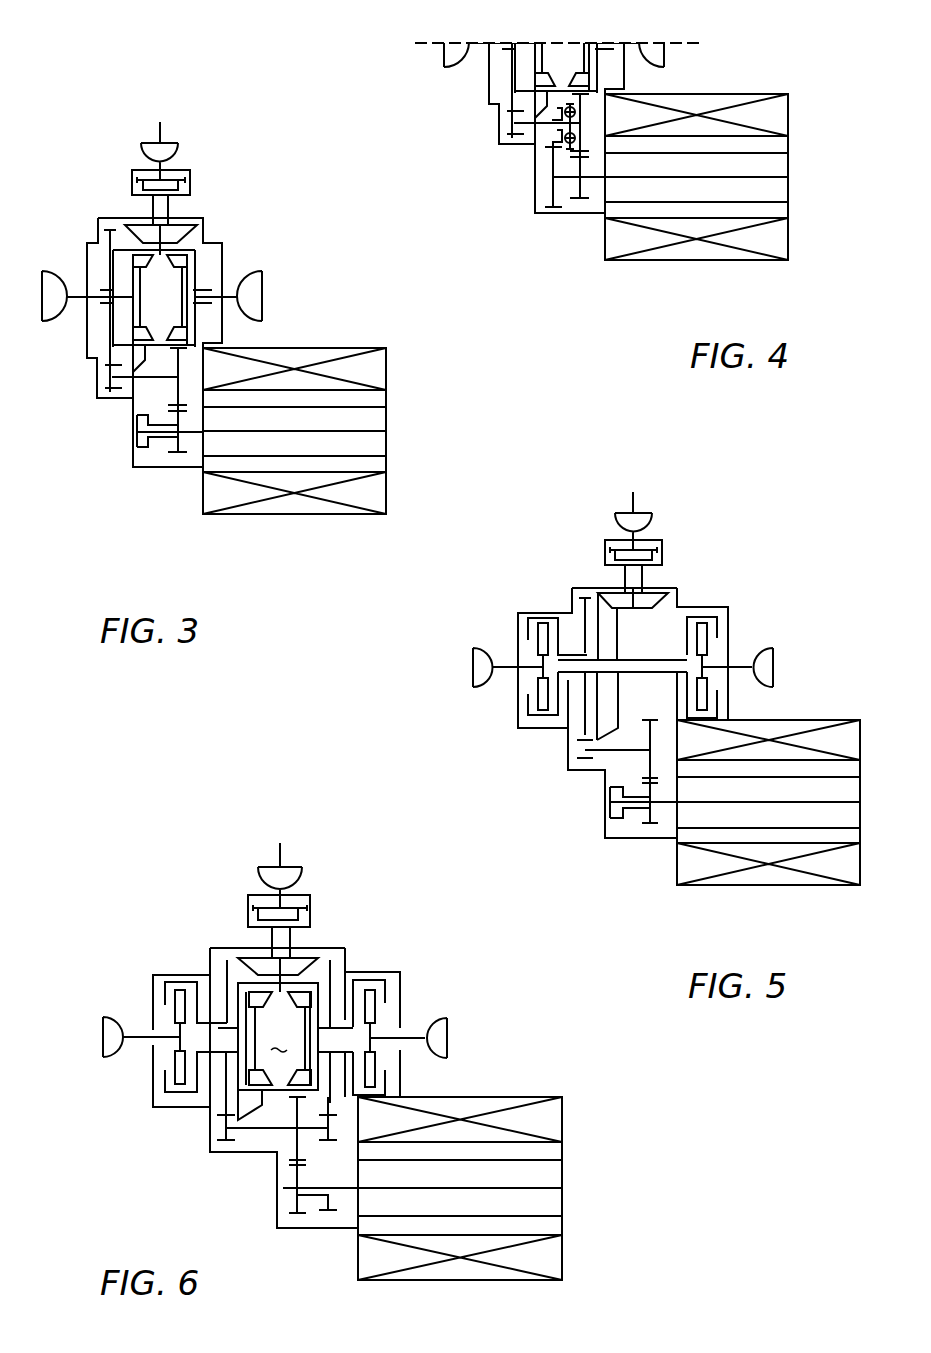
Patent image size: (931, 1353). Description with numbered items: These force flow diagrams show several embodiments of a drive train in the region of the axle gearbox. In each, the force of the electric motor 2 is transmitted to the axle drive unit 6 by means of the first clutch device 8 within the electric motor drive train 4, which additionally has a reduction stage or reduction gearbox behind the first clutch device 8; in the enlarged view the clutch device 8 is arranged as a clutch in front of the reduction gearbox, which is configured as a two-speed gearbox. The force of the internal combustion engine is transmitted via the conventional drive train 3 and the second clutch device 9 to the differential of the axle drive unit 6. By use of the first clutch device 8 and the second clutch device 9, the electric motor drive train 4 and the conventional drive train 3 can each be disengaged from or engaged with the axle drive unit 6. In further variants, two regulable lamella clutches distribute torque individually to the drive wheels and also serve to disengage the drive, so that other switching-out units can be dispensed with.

In FIG. 3, the electric motor 2 is at (302, 360).
In FIG. 4, the electric motor 2 is at (730, 102).
In FIG. 5, the electric motor 2 is at (795, 728).
In FIG. 6, the electric motor 2 is at (485, 1105).
In FIG. 3, the conventional drive train 3 is at (163, 130).
In FIG. 5, the conventional drive train 3 is at (625, 502).
In FIG. 6, the conventional drive train 3 is at (277, 853).
In FIG. 3, the electric motor drive train 4 is at (108, 418).
In FIG. 4, the electric motor drive train 4 is at (515, 167).
In FIG. 5, the electric motor drive train 4 is at (555, 742).
In FIG. 6, the electric motor drive train 4 is at (198, 1095).
In FIG. 3, the axle drive unit 6 is at (173, 278).
In FIG. 4, the axle drive unit 6 is at (553, 67).
In FIG. 5, the axle drive unit 6 is at (657, 625).
In FIG. 6, the axle drive unit 6 is at (278, 1023).
In FIG. 3, the first clutch device 8 is at (150, 445).
In FIG. 4, the first clutch device 8 is at (569, 145).
In FIG. 5, the first clutch device 8 is at (610, 795).
In FIG. 6, the first clutch device 8 is at (370, 1000).
In FIG. 3, the second clutch device 9 is at (172, 187).
In FIG. 5, the second clutch device 9 is at (640, 558).
In FIG. 6, the second clutch device 9 is at (262, 918).